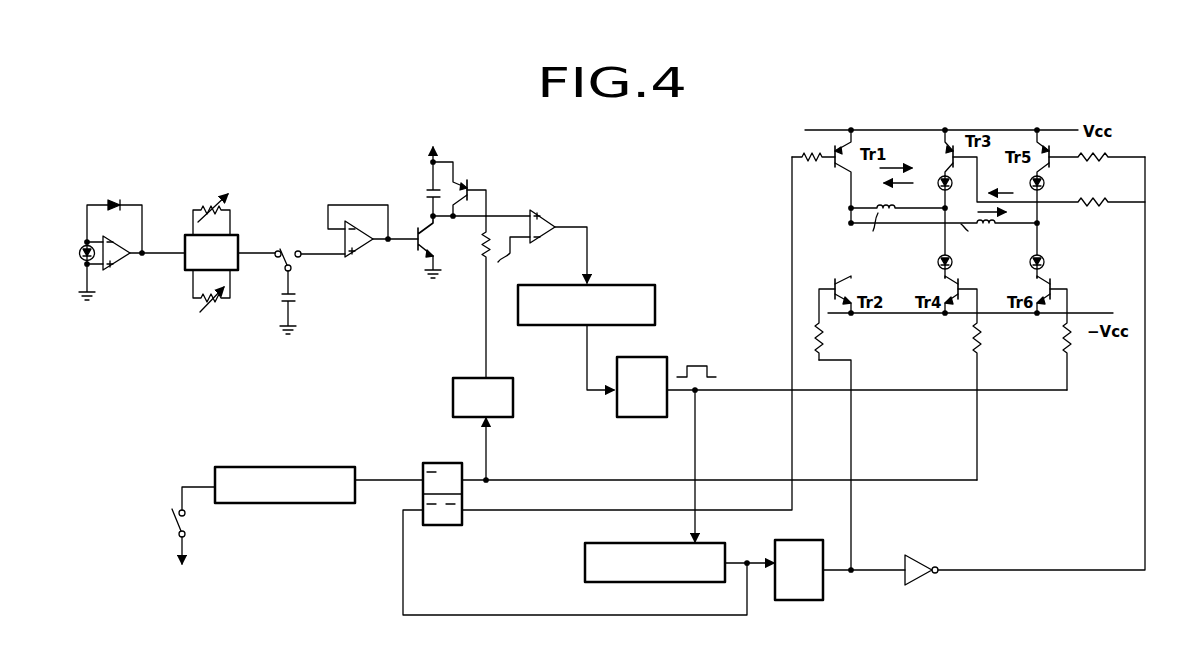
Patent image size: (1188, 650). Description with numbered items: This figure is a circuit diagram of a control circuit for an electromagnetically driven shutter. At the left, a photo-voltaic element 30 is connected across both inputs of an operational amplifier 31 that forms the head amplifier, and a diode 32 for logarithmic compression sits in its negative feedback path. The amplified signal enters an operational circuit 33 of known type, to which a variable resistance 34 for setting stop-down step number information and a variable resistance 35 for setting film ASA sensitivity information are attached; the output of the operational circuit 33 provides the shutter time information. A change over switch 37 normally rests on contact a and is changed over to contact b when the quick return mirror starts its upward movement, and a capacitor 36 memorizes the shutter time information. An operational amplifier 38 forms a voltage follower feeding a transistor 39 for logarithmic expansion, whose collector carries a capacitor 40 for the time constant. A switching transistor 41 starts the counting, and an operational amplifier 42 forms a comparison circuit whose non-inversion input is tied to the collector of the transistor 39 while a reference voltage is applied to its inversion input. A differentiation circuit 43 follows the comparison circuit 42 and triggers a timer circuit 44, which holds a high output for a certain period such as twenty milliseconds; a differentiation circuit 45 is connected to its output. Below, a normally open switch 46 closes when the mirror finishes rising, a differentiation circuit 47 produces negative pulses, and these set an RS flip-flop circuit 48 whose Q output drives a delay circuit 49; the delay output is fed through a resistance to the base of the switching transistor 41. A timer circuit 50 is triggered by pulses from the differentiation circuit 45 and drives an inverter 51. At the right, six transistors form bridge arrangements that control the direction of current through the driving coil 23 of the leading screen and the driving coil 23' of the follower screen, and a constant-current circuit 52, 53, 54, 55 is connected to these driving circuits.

The driving coil 23 is at (898, 217).
The driving coil 23' is at (944, 229).
The photo-voltaic element 30 is at (80, 258).
The operational amplifier 31 is at (123, 270).
The diode 32 is at (113, 198).
The operational circuit 33 is at (185, 266).
The variable resistance 34 is at (232, 193).
The variable resistance 35 is at (202, 332).
The capacitor 36 is at (278, 302).
The change over switch 37 is at (286, 240).
The operational amplifier 38 is at (360, 257).
The transistor 39 is at (413, 250).
The capacitor 40 is at (427, 192).
The switching transistor 41 is at (470, 178).
The operational amplifier 42 is at (543, 212).
The differentiation circuit 43 is at (617, 287).
The timer circuit 44 is at (633, 417).
The differentiation circuit 45 is at (625, 582).
The normally open switch 46 is at (172, 528).
The differentiation circuit 47 is at (265, 503).
The RS flip-flop circuit 48 is at (442, 525).
The delay circuit 49 is at (513, 407).
The timer circuit 50 is at (797, 600).
The inverter 51 is at (908, 585).
The constant-current circuit 52 is at (956, 185).
The constant-current circuit 53 is at (937, 265).
The constant-current circuit 54 is at (1043, 191).
The constant-current circuit 55 is at (1045, 262).